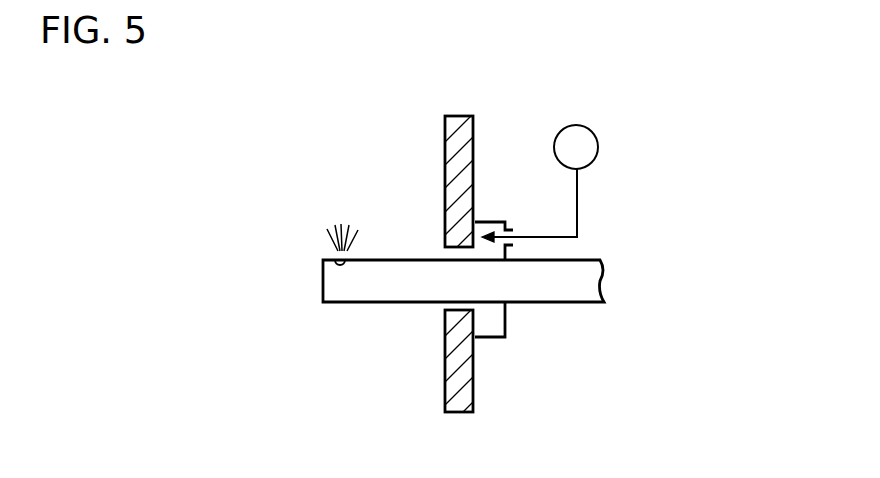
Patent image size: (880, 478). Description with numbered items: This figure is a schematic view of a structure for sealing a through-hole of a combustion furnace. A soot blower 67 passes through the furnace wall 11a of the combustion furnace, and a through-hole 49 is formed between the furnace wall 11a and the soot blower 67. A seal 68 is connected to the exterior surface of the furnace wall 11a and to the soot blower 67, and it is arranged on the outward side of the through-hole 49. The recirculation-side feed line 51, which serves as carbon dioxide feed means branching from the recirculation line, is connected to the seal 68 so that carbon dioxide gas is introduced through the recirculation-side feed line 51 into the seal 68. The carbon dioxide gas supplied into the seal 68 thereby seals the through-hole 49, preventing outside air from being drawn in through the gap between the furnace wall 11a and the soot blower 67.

The through-hole 49 is at (450, 253).
The soot blower 67 is at (392, 282).
The furnace wall 11a is at (473, 383).
The seal 68 is at (490, 222).
The recirculation-side feed line 51 is at (577, 207).